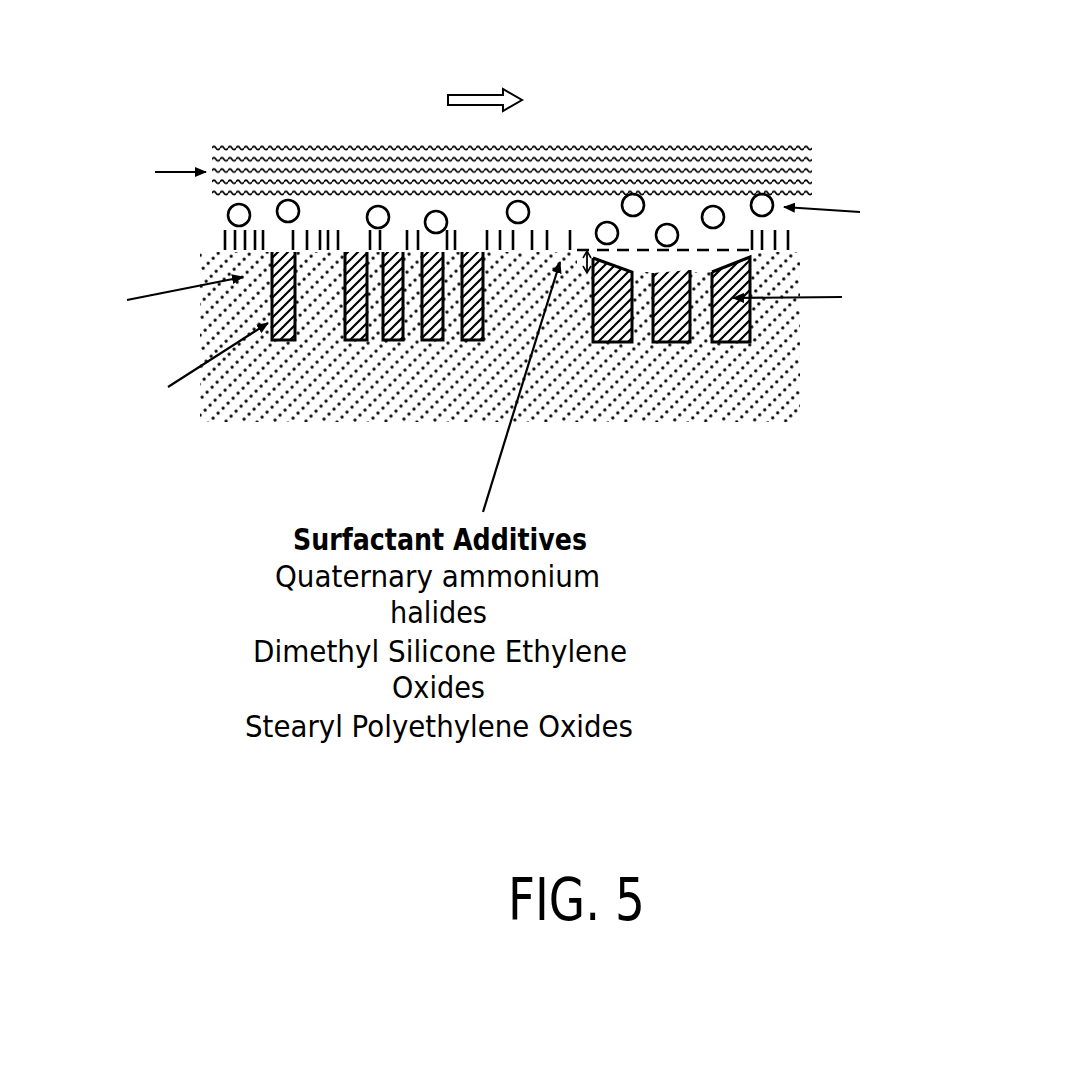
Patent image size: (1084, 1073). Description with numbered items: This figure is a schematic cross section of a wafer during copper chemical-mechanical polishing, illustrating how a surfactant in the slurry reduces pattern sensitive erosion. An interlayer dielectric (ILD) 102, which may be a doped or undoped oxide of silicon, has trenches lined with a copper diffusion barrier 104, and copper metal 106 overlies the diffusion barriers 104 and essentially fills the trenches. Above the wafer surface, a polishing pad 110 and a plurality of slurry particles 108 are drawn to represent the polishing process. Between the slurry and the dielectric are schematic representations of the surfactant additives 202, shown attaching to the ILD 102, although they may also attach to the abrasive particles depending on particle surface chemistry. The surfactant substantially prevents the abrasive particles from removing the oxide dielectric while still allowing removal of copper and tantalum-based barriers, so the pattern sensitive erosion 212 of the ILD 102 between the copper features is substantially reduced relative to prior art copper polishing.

The interlayer dielectric (ILD) 102 is at (763, 407).
The copper diffusion barrier 104 is at (750, 342).
The copper metal 106 is at (715, 340).
The slurry particles 108 is at (713, 205).
The polishing pad 110 is at (336, 150).
The surfactant additives 202 is at (563, 240).
The pattern sensitive erosion 212 is at (582, 256).